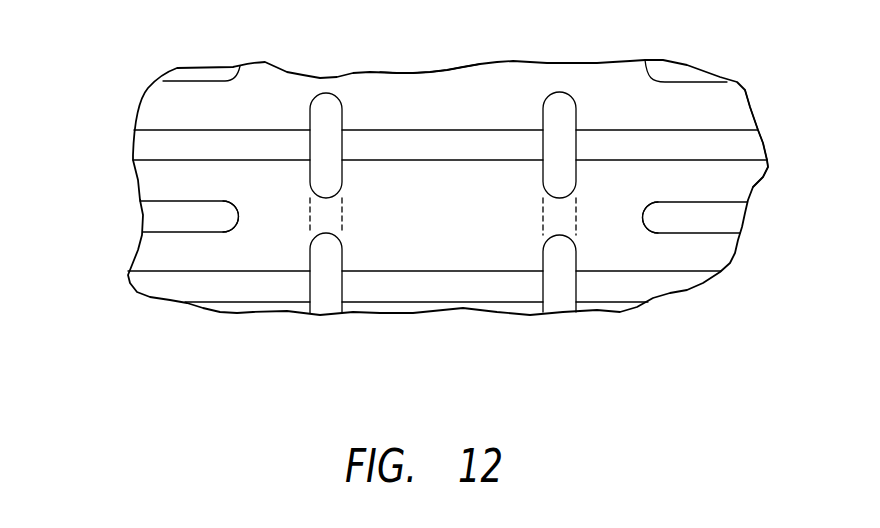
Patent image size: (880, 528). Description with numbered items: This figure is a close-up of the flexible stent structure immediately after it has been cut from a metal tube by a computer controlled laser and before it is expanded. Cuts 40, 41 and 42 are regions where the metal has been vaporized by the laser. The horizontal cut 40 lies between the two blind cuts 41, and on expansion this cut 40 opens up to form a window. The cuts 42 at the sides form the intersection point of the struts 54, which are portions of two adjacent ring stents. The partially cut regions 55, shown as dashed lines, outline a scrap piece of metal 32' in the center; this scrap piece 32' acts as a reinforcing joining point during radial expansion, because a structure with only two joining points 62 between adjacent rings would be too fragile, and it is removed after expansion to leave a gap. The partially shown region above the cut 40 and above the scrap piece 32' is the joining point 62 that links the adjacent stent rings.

The scrap piece of metal 32' is at (448, 187).
The cut 40 is at (420, 147).
The blind cut 41 is at (562, 107).
The cut 42 is at (160, 220).
The strut 54 is at (700, 187).
The partially cut region 55 is at (558, 217).
The joining point 62 is at (438, 98).